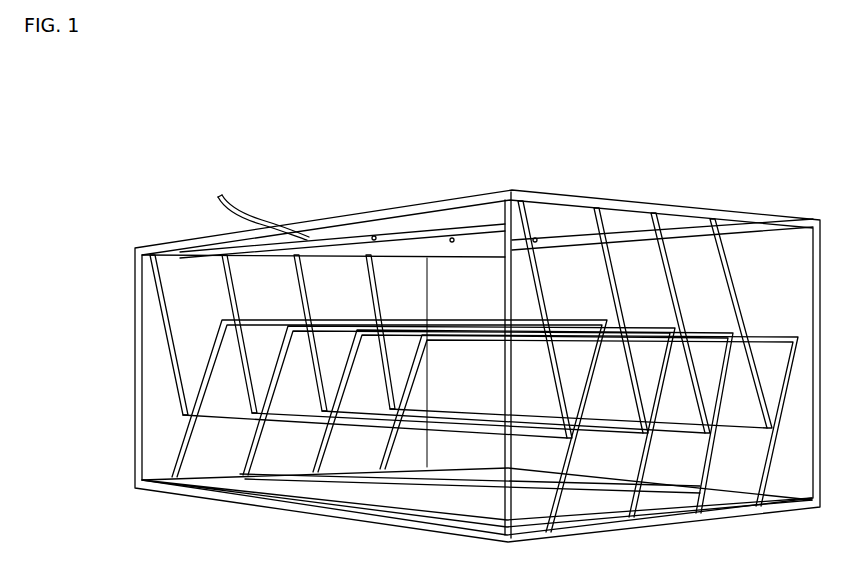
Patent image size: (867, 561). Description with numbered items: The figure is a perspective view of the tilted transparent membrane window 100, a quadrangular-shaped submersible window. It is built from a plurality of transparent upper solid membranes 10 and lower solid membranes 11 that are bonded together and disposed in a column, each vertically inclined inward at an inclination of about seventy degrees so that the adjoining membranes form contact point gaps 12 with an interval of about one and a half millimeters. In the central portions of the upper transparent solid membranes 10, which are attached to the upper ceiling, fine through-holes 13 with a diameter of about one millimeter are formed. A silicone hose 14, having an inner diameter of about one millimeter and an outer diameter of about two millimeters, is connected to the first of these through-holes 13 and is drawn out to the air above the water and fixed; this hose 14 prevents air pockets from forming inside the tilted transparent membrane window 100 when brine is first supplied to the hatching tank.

The tilted transparent membrane window 100 is at (552, 150).
The upper transparent solid membrane 10 is at (180, 304).
The lower transparent solid membrane 11 is at (207, 457).
The contact point gap 12 is at (207, 411).
The fine through-hole 13 is at (535, 240).
The silicone hose 14 is at (222, 214).